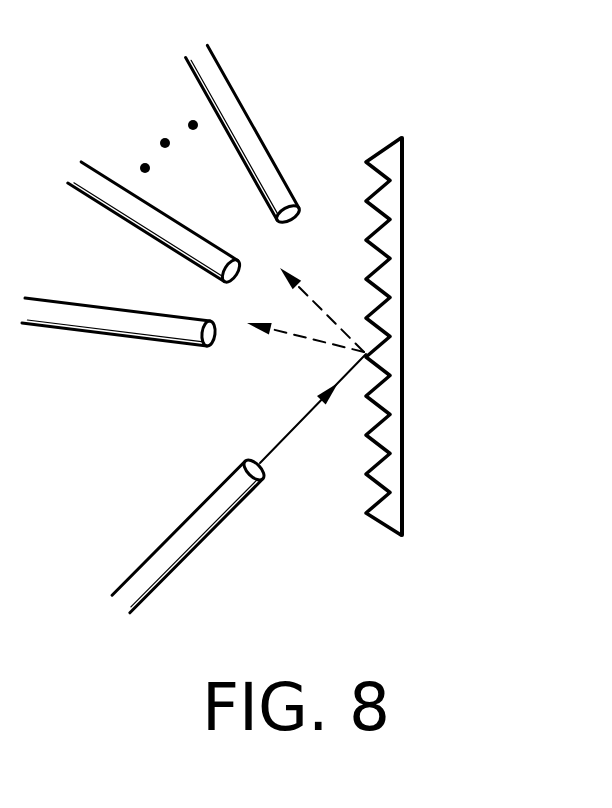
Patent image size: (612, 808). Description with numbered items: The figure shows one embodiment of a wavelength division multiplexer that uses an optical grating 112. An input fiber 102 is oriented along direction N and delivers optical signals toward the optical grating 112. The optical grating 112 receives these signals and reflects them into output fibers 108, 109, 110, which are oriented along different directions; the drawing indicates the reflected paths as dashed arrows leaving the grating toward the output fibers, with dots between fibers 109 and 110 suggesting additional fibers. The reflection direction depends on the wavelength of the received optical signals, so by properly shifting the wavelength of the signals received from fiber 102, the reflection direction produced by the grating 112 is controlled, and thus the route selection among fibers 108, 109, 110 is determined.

The fiber 102 is at (168, 550).
The fiber 108 is at (90, 322).
The fiber 109 is at (118, 202).
The fiber 110 is at (220, 87).
The optical grating 112 is at (403, 312).
The direction N is at (288, 433).